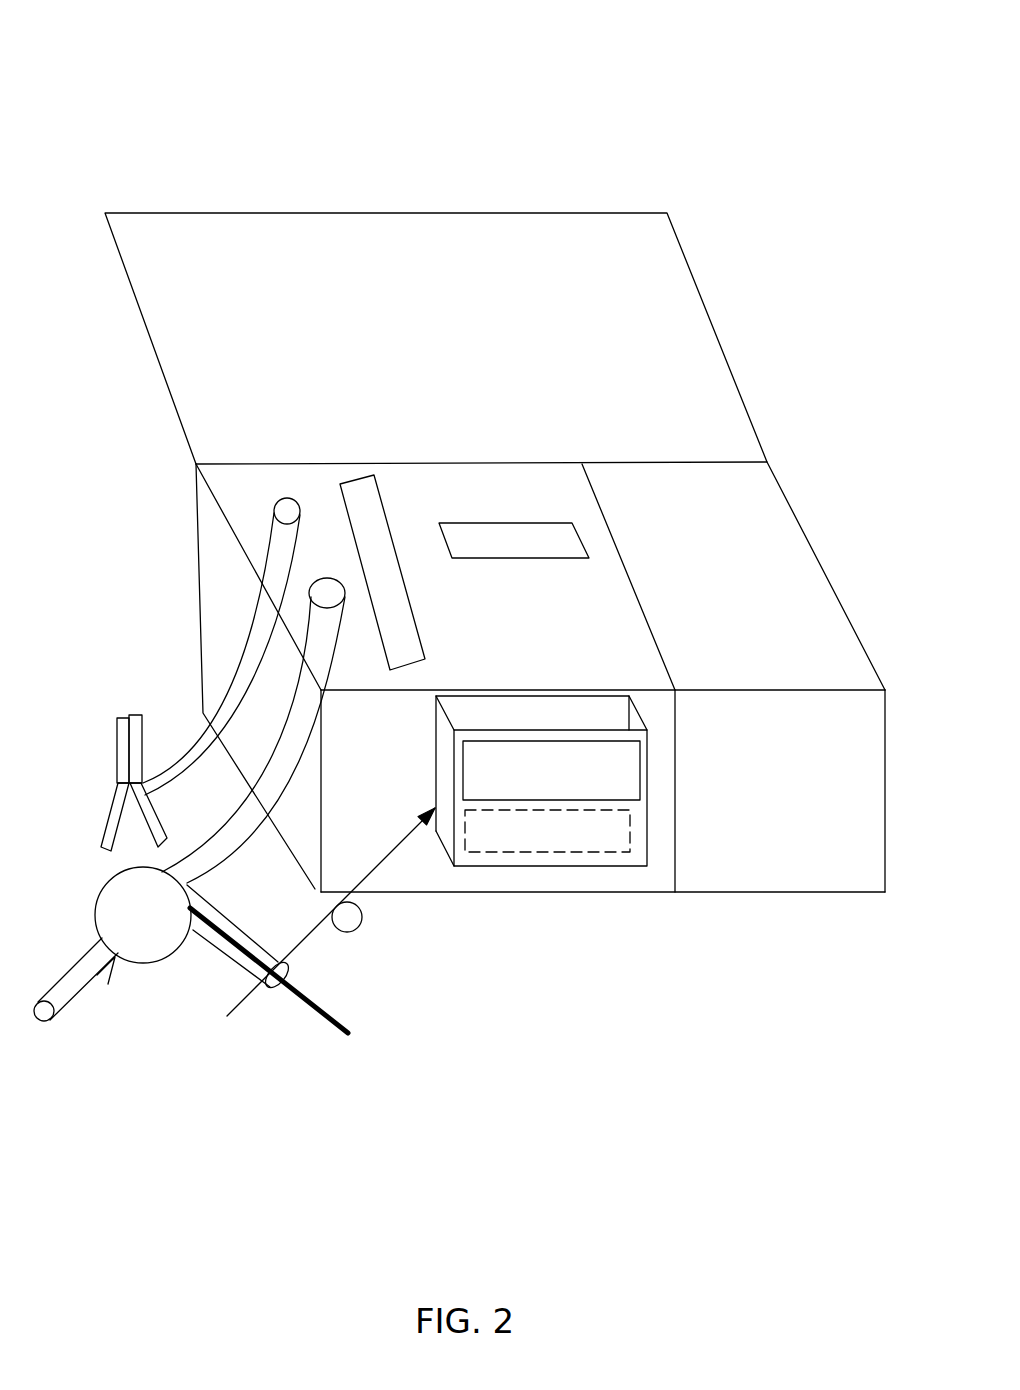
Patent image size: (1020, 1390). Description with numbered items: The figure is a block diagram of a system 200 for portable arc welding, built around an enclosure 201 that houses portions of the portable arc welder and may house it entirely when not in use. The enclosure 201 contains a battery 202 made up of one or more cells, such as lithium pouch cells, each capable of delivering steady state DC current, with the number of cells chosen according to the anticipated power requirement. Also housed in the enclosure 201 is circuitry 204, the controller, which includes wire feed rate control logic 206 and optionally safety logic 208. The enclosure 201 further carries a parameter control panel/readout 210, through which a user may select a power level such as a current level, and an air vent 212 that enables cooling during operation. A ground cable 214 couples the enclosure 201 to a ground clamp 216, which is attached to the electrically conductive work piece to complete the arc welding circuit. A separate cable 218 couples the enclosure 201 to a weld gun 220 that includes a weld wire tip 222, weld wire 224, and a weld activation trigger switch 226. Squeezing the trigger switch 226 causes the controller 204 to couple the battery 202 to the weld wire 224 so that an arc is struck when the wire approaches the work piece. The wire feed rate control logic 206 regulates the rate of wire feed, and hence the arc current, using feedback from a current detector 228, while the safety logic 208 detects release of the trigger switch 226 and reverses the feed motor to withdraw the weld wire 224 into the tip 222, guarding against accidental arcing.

The system 200 is at (113, 32).
The enclosure 201 is at (212, 279).
The battery 202 is at (541, 697).
The circuitry 204 is at (500, 726).
The wire feed rate control logic 206 is at (622, 847).
The safety logic 208 is at (570, 895).
The parameter control panel/readout 210 is at (575, 515).
The air vent 212 is at (428, 531).
The ground cable 214 is at (187, 643).
The ground clamp 216 is at (106, 755).
The cable 218 is at (294, 730).
The weld gun 220 is at (167, 927).
The weld wire tip 222 is at (299, 938).
The weld wire 224 is at (314, 1005).
The weld activation trigger switch 226 is at (126, 1020).
The current detector 228 is at (227, 1016).